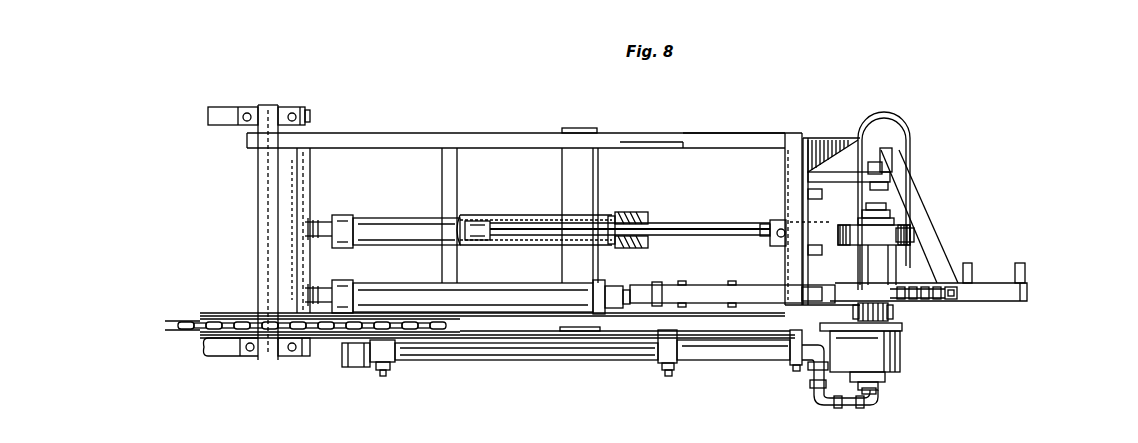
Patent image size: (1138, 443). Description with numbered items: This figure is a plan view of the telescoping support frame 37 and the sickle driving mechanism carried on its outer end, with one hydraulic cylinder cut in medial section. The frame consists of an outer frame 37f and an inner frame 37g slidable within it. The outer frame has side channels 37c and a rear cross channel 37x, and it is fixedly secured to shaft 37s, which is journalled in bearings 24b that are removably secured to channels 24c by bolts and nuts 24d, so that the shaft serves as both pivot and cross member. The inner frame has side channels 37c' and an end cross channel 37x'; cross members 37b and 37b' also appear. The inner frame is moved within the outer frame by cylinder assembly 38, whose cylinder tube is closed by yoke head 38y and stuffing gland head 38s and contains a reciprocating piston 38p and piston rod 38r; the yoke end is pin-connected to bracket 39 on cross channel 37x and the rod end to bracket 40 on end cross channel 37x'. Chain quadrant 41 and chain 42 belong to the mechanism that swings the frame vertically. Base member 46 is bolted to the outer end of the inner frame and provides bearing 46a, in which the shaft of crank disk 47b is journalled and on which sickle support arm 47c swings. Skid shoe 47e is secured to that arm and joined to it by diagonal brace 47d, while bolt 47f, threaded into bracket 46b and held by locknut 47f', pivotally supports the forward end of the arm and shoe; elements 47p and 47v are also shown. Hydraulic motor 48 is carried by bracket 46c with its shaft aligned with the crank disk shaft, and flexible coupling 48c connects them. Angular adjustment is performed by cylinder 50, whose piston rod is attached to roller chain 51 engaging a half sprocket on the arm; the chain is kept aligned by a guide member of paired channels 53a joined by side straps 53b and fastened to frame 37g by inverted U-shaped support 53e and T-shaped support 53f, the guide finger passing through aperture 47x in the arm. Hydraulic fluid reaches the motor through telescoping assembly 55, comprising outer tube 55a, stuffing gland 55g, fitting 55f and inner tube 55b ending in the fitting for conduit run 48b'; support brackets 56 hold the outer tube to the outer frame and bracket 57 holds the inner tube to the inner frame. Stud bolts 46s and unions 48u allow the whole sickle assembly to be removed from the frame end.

The bearings 24b is at (262, 105).
The channels 24c is at (212, 118).
The bolts and nuts 24d is at (292, 108).
The telescoping support frame 37 is at (598, 112).
The frame cross member 37b is at (561, 215).
The frame cross member 37b' is at (468, 215).
The side channels 37c is at (524, 120).
The side channels 37c' is at (734, 116).
The outer frame 37f is at (396, 128).
The inner frame 37g is at (760, 100).
The shaft 37s is at (266, 180).
The rear cross channel 37x is at (321, 228).
The end cross channel 37x' is at (765, 225).
The cylinder assembly 38 is at (405, 218).
The piston 38p is at (478, 228).
The piston rod 38r is at (567, 230).
The stuffing gland head 38s is at (640, 190).
The yoke head 38y is at (356, 240).
The bracket 39 is at (318, 228).
The bracket 40 is at (780, 230).
The chain quadrant 41 is at (236, 313).
The chain 42 is at (170, 320).
The base member 46 is at (808, 134).
The bearing 46a is at (897, 262).
The bracket 46b is at (858, 178).
The bracket 46c is at (905, 330).
The stud bolts 46s is at (822, 194).
The crank disk 47b is at (876, 232).
The sickle support arm 47c is at (1018, 302).
The diagonal brace 47d is at (940, 253).
The skid shoe 47e is at (886, 140).
The bolt 47f is at (927, 150).
The locknut 47f' is at (943, 167).
The pivot 47p is at (912, 234).
The upright post 47v is at (1024, 277).
The aperture 47x is at (956, 300).
The hydraulic motor 48 is at (900, 372).
The conduit run 48b' is at (838, 415).
The flexible coupling 48c is at (895, 312).
The unions 48u is at (822, 385).
The cylinder 50 is at (520, 296).
The roller chain 51 is at (922, 300).
The channels 53a is at (732, 295).
The side straps 53b is at (680, 285).
The inverted U-shaped support 53e is at (795, 292).
The T-shaped support 53f is at (655, 290).
The telescoping conduit assembly 55 is at (626, 362).
The outer tube 55a is at (542, 348).
The inner tube 55b is at (744, 352).
The fitting 55f is at (358, 368).
The stuffing gland 55g is at (678, 360).
The support brackets 56 is at (384, 372).
The bracket 57 is at (794, 365).